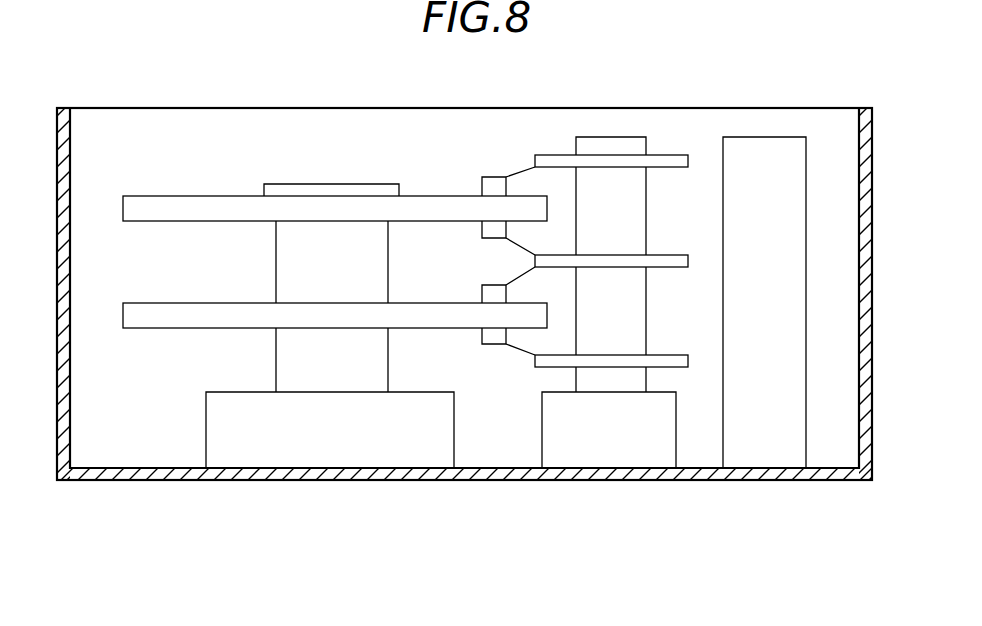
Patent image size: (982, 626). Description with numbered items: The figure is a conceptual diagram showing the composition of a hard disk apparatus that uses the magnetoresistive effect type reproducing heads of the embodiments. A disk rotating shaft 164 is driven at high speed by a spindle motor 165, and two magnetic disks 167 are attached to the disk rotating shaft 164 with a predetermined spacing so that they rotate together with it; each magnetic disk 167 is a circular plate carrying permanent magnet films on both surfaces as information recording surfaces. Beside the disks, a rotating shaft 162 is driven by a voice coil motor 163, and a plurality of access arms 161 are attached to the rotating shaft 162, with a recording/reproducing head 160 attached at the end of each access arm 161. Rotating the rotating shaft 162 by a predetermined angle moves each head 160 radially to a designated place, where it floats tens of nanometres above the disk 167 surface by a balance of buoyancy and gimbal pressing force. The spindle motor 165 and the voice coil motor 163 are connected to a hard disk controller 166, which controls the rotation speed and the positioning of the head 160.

The recording/reproducing head 160 is at (488, 186).
The access arm 161 is at (551, 155).
The rotating shaft 162 is at (620, 147).
The voice coil motor 163 is at (607, 448).
The disk rotating shaft 164 is at (330, 370).
The spindle motor 165 is at (402, 453).
The hard disk controller 166 is at (762, 155).
The magnetic disk 167 is at (220, 207).